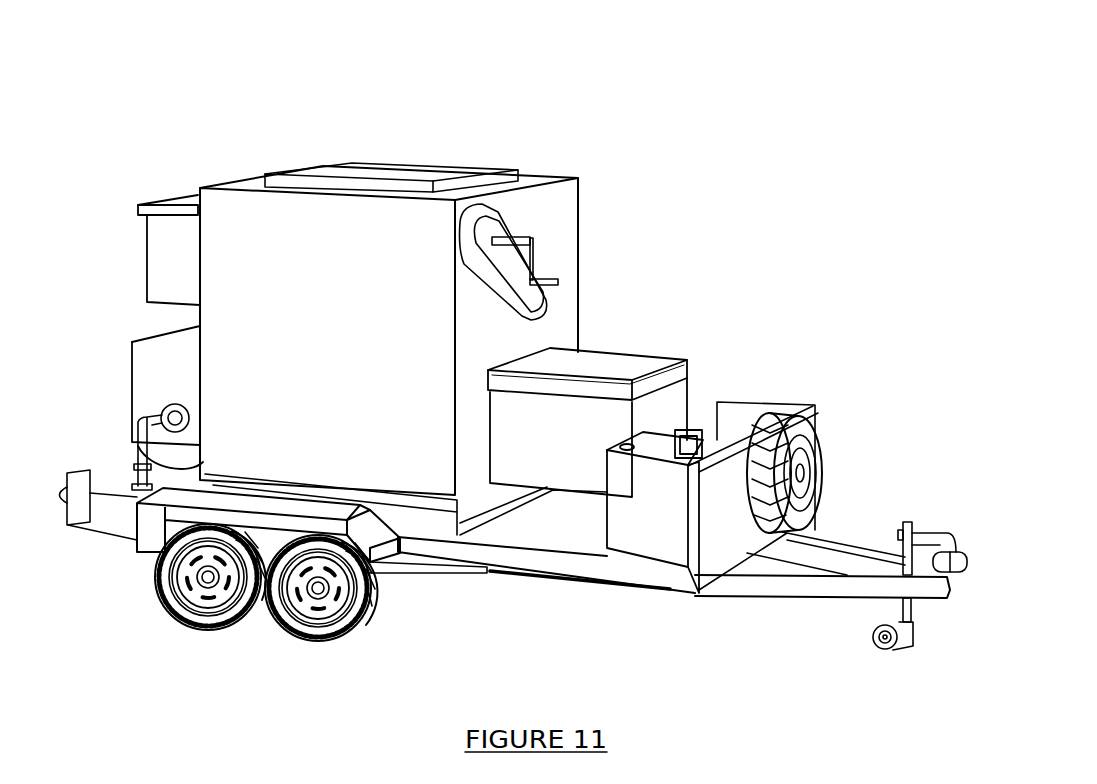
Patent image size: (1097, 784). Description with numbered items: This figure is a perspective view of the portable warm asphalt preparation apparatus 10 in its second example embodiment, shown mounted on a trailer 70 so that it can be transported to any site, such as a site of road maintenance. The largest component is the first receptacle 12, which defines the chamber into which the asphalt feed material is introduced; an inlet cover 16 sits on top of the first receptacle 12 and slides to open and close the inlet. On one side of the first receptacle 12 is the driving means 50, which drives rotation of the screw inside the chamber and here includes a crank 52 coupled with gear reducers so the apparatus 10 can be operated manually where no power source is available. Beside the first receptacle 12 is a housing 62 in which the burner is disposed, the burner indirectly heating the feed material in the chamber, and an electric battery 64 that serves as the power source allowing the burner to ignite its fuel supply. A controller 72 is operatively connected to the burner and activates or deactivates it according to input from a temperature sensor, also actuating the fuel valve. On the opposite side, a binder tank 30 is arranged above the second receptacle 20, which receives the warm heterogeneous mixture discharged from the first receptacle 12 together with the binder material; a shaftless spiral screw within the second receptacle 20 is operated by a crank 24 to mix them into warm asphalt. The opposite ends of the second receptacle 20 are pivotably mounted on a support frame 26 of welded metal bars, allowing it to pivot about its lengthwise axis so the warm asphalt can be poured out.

The portable warm asphalt preparation apparatus 10 is at (714, 92).
The first receptacle 12 is at (230, 205).
The inlet cover 16 is at (403, 173).
The second receptacle 20 is at (142, 380).
The crank 24 is at (158, 415).
The support frame 26 is at (128, 489).
The binder tank 30 is at (158, 252).
The driving means 50 is at (561, 263).
The crank 52 is at (557, 286).
The housing 62 is at (676, 396).
The electric battery 64 is at (700, 524).
The trailer 70 is at (586, 600).
The controller 72 is at (741, 412).